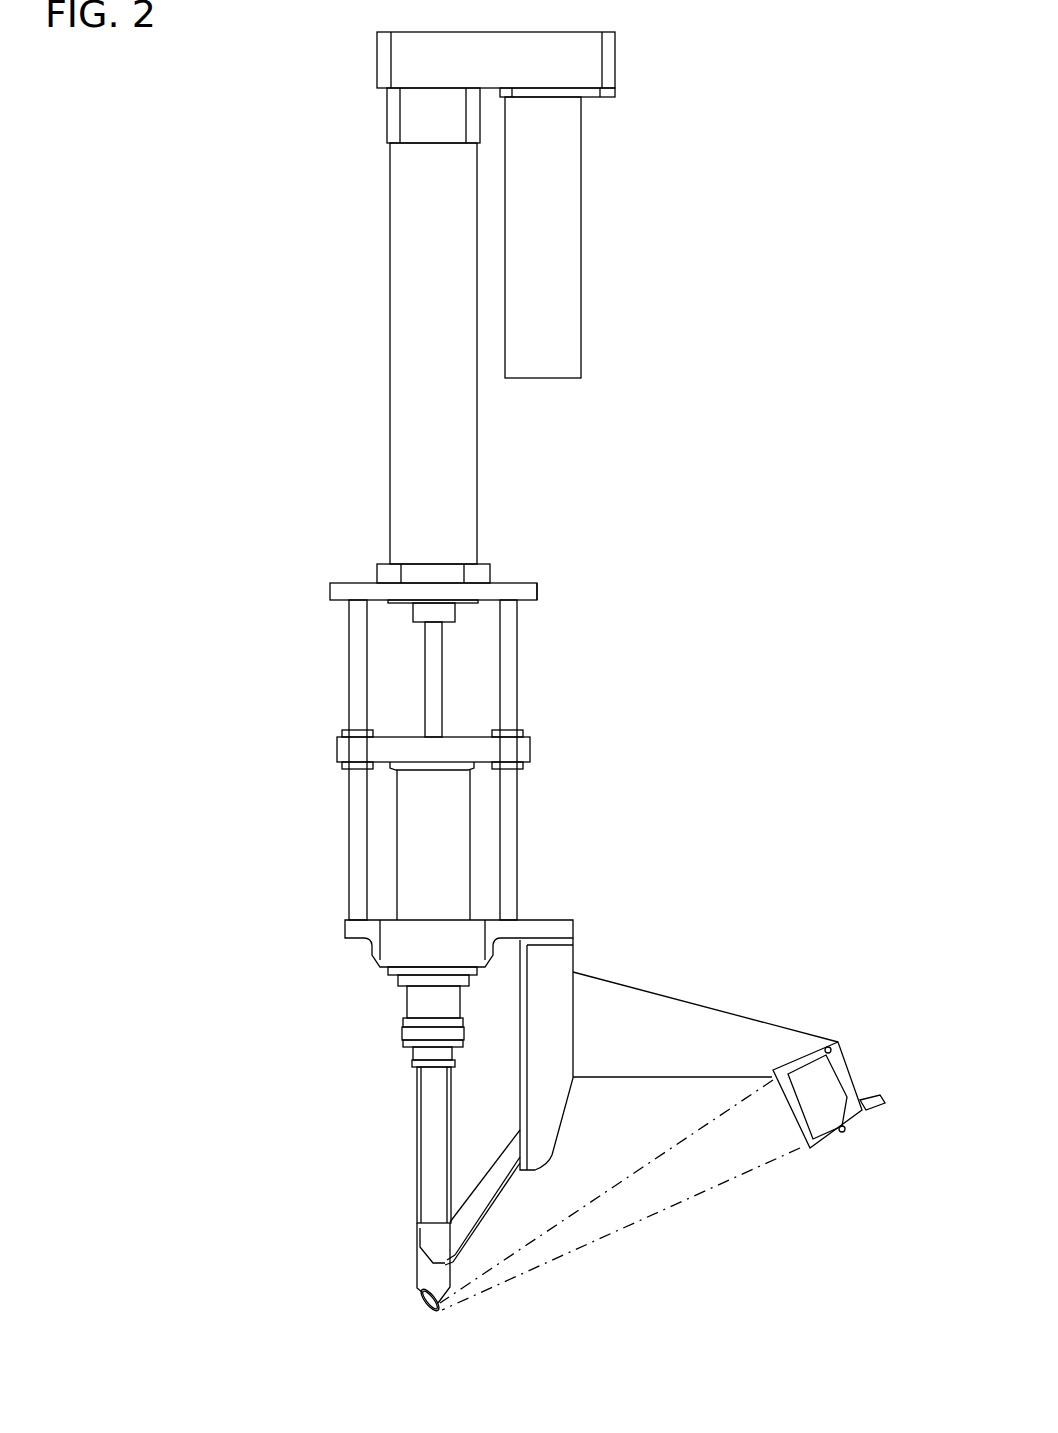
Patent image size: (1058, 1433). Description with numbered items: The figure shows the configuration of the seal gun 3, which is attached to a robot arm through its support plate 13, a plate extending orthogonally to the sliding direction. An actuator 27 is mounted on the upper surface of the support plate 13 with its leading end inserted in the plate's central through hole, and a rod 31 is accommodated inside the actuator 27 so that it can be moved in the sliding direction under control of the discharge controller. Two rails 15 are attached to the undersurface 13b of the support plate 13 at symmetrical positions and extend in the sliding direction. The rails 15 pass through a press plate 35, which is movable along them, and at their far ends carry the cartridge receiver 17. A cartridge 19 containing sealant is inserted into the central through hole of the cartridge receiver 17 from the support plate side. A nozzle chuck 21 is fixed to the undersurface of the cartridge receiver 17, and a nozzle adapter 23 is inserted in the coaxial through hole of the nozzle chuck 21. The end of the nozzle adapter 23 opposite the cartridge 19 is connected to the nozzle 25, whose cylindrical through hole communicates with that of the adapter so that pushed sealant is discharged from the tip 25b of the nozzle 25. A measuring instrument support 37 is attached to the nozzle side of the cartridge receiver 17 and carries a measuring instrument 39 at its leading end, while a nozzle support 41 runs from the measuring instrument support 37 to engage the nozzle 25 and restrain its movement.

The seal gun 3 is at (244, 92).
The actuator 27 is at (390, 305).
The support plate 13 is at (337, 583).
The undersurface of the support plate 13b is at (527, 601).
The rod 31 is at (425, 648).
The rails 15 is at (349, 700).
The press plate 35 is at (337, 752).
The cartridge 19 is at (470, 852).
The cartridge receiver 17 is at (345, 925).
The nozzle chuck 21 is at (403, 1030).
The nozzle adapter 23 is at (417, 1110).
The nozzle 25 is at (417, 1262).
The tip of the nozzle 25b is at (452, 1322).
The measuring instrument support 37 is at (637, 986).
The measuring instrument 39 is at (850, 1065).
The nozzle support 41 is at (503, 1192).